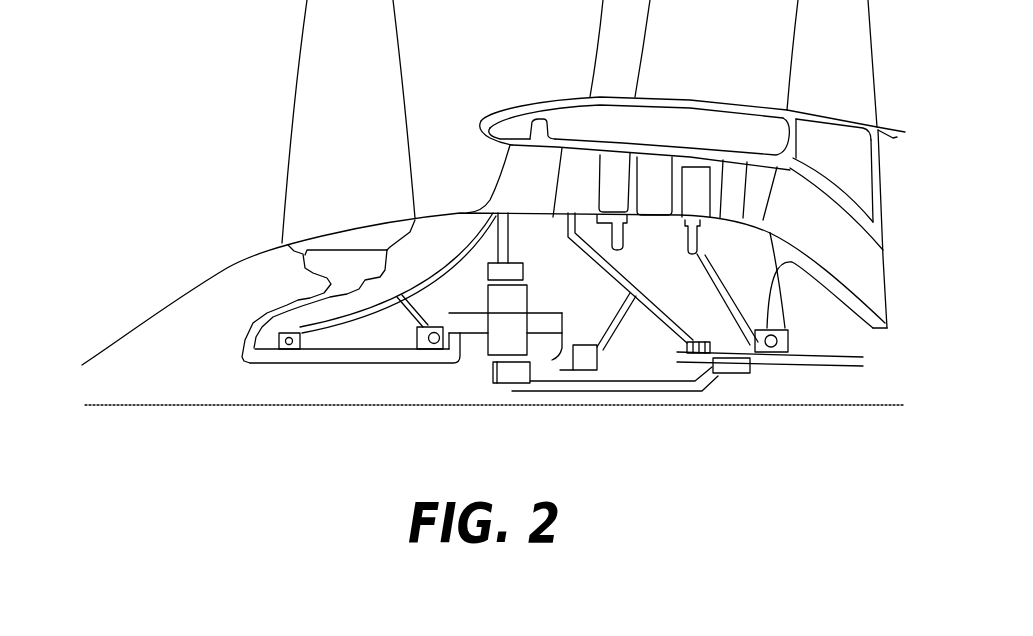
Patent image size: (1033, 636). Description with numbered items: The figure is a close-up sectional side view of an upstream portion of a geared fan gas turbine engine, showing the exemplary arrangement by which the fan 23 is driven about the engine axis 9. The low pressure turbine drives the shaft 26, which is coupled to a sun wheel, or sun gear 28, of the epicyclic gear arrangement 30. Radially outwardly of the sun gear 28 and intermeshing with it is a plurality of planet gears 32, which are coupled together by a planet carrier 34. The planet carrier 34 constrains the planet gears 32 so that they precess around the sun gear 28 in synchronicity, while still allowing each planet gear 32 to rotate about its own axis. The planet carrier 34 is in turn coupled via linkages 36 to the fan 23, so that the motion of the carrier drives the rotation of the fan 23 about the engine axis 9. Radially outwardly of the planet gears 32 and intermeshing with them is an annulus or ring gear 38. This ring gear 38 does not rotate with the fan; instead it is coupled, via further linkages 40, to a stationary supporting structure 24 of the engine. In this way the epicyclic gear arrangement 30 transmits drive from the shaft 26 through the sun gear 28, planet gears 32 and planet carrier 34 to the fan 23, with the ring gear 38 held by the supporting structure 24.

The engine axis 9 is at (252, 407).
The fan 23 is at (318, 157).
The stationary supporting structure 24 is at (520, 175).
The shaft 26 is at (758, 363).
The sun gear 28 is at (499, 373).
The epicyclic gear arrangement 30 is at (465, 358).
The planet gears 32 is at (497, 350).
The planet carrier 34 is at (565, 345).
The linkages 36 is at (443, 363).
The ring gear 38 is at (488, 279).
The linkages 40 is at (508, 233).